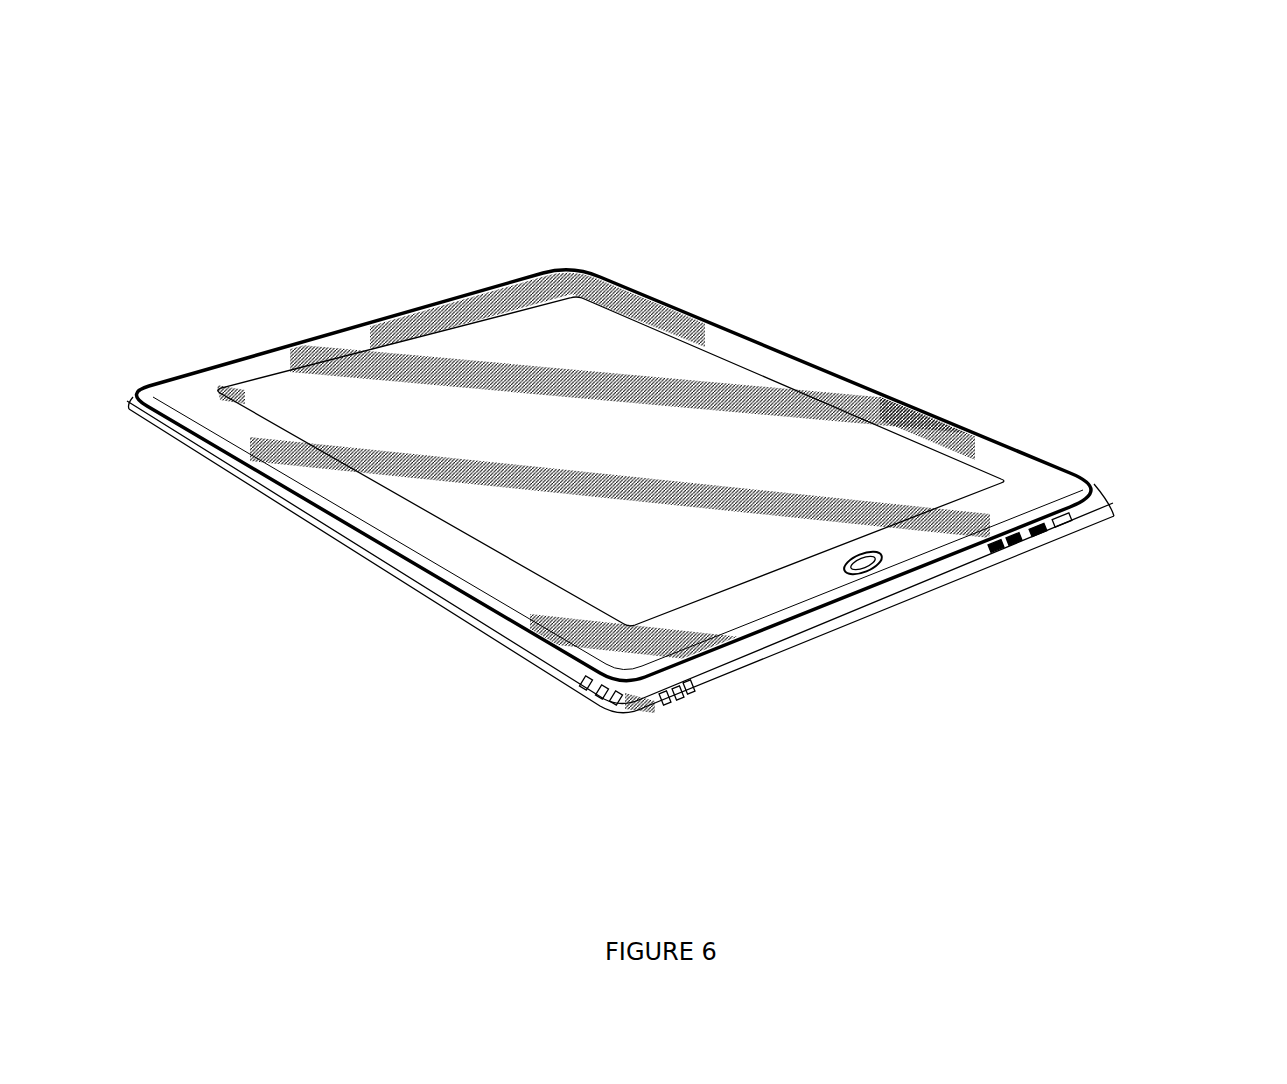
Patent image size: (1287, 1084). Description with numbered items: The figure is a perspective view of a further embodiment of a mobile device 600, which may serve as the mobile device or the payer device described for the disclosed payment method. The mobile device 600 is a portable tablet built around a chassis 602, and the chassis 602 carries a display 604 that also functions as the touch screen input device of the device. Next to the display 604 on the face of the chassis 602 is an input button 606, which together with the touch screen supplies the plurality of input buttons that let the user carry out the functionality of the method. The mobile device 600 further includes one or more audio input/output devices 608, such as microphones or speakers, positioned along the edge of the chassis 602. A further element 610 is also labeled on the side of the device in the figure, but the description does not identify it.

The mobile device 600 is at (699, 448).
The chassis 602 is at (648, 710).
The display 604 is at (557, 415).
The input button 606 is at (885, 567).
The audio input/output device 608 is at (387, 332).
The connector ports 610 is at (1050, 530).